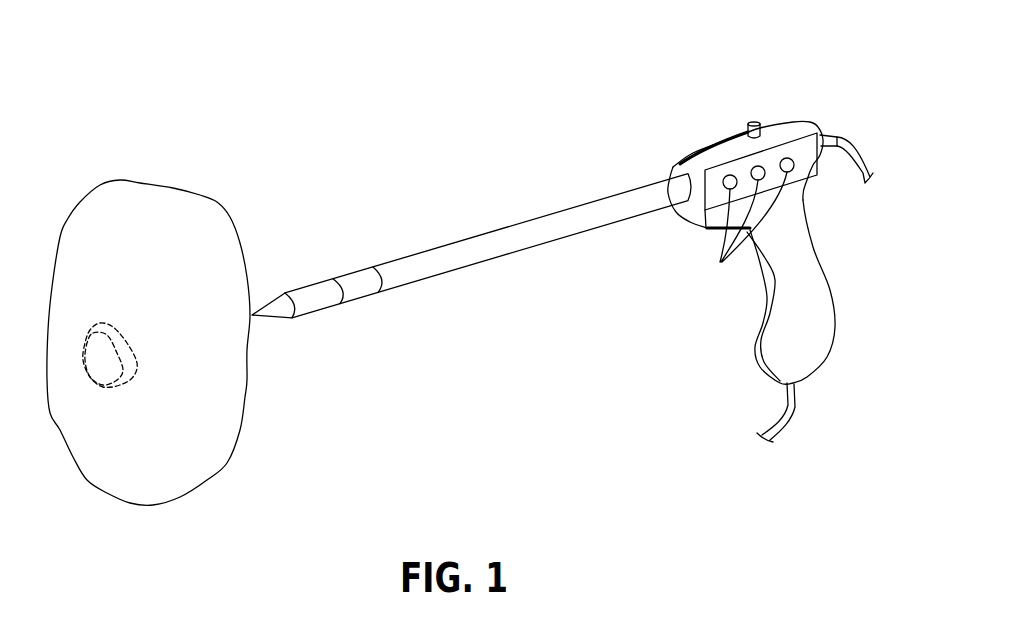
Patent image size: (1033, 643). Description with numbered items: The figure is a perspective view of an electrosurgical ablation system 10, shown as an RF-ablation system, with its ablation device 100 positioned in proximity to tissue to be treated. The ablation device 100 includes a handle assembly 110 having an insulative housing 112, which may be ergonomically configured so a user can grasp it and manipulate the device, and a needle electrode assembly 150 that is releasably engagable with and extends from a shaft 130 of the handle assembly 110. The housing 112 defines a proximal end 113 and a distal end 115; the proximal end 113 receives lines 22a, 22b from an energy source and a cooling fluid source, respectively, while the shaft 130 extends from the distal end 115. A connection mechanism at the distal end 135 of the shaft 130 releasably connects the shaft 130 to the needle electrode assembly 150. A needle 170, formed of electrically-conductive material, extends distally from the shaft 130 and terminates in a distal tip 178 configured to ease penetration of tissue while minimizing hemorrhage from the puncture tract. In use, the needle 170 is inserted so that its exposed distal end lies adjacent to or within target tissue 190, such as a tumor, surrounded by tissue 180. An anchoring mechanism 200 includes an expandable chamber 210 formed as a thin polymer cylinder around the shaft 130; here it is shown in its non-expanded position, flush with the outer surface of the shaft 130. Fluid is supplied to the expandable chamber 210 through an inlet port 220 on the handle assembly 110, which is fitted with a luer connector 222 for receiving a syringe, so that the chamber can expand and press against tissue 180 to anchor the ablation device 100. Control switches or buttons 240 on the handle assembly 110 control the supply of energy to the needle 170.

The electrosurgical ablation system 10 is at (588, 123).
The ablation device 100 is at (551, 205).
The handle assembly 110 is at (766, 244).
The housing 112 is at (792, 193).
The proximal end 113 is at (833, 137).
The distal end 115 is at (683, 222).
The shaft 130 is at (508, 260).
The distal end 135 is at (333, 277).
The needle electrode assembly 150 is at (320, 321).
The needle 170 is at (277, 290).
The distal tip 178 is at (253, 311).
The tissue 180 is at (213, 453).
The target tissue 190 is at (107, 387).
The anchoring mechanism 200 is at (364, 257).
The expandable chamber 210 is at (363, 288).
The inlet port 220 is at (743, 116).
The luer connector 222 is at (752, 120).
The control switches and/or buttons 240 is at (720, 262).
The line 22a is at (850, 140).
The line 22b is at (793, 417).